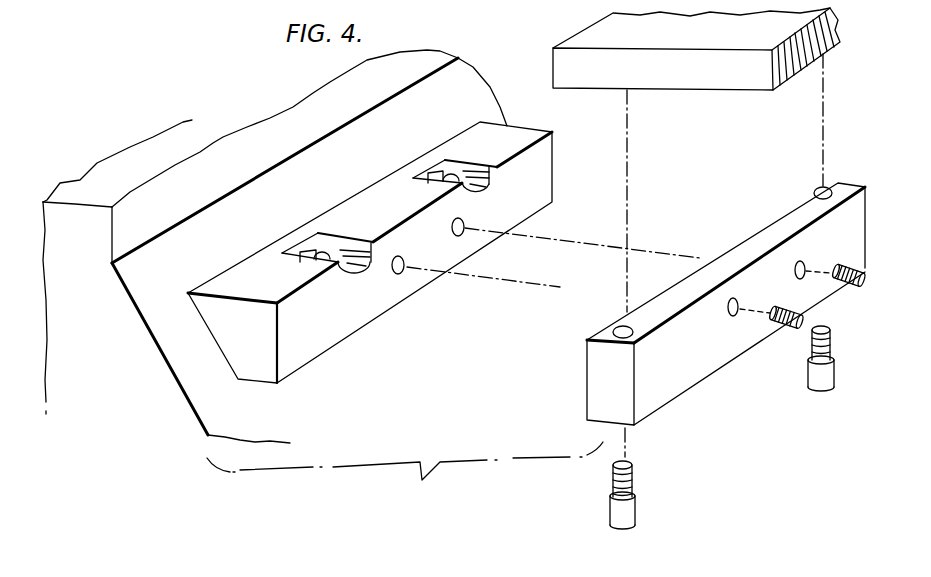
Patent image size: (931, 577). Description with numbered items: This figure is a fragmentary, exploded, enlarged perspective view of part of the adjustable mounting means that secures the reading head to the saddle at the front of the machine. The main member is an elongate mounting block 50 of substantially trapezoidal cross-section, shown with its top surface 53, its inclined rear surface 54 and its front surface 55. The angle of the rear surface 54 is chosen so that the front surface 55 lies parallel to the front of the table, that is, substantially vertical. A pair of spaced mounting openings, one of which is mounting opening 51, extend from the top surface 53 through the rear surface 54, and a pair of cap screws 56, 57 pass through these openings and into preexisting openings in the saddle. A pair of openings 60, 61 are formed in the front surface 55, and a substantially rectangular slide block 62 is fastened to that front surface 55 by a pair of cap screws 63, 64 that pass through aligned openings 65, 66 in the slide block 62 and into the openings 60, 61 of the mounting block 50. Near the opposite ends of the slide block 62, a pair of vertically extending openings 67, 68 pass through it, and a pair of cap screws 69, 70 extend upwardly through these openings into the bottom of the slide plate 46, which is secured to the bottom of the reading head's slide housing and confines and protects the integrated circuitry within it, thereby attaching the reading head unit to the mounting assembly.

The slide plate 46 is at (682, 72).
The mounting block 50 is at (374, 244).
The mounting opening 51 is at (422, 176).
The top surface 53 is at (352, 212).
The rear surface 54 is at (203, 320).
The front surface 55 is at (535, 170).
The cap screw 56 is at (447, 168).
The cap screw 57 is at (313, 248).
The opening 60 is at (460, 237).
The opening 61 is at (408, 270).
The slide block 62 is at (697, 293).
The cap screw 63 is at (843, 283).
The cap screw 64 is at (783, 327).
The aligned opening 65 is at (803, 267).
The aligned opening 66 is at (730, 312).
The vertically extending opening 67 is at (818, 188).
The vertically extending opening 68 is at (620, 328).
The cap screw 69 is at (810, 350).
The cap screw 70 is at (632, 482).